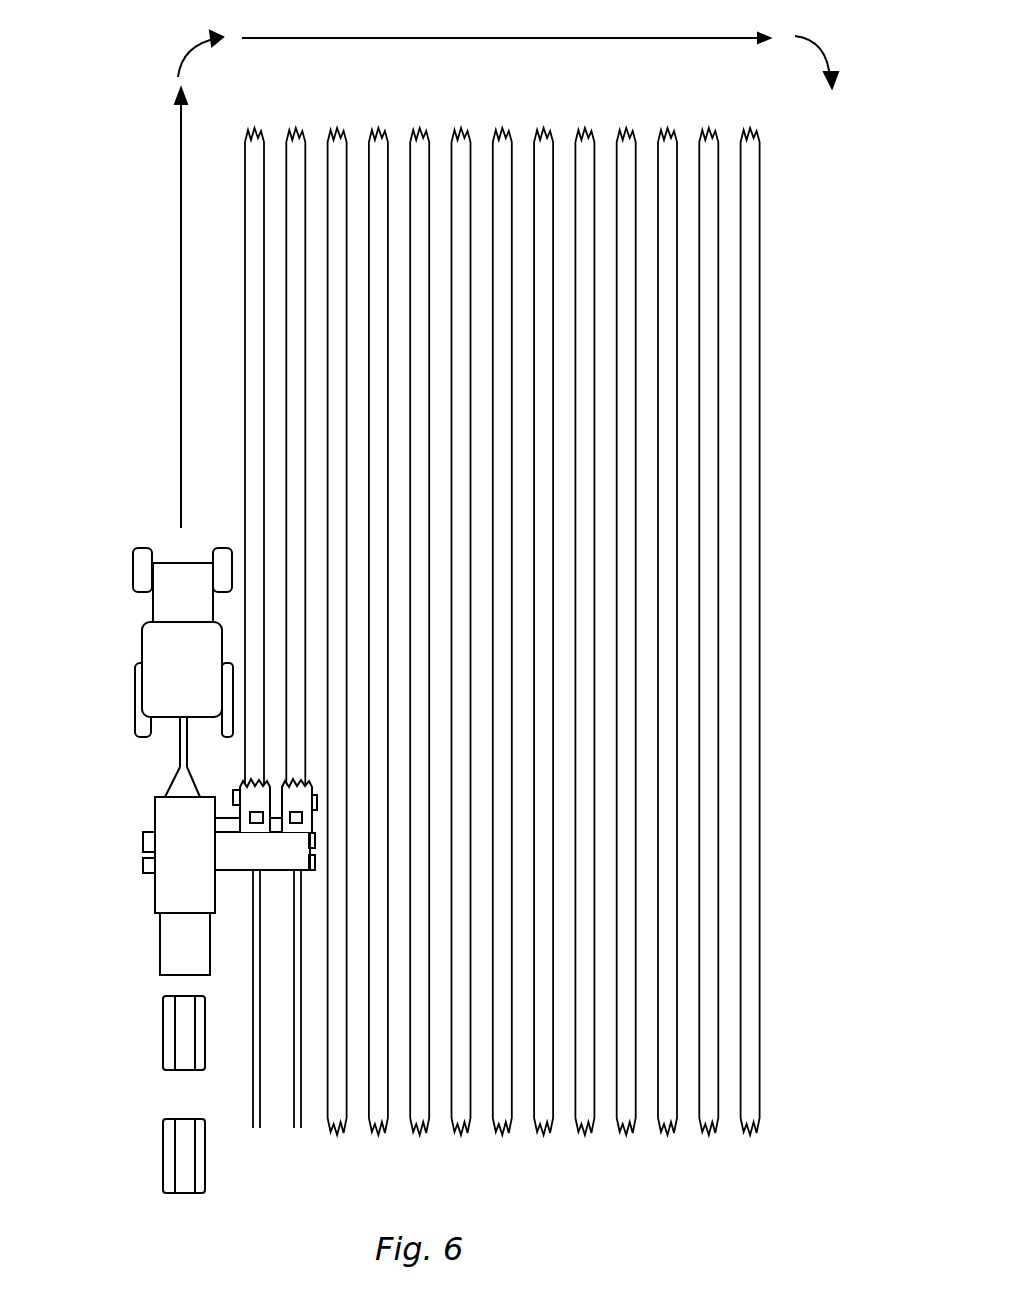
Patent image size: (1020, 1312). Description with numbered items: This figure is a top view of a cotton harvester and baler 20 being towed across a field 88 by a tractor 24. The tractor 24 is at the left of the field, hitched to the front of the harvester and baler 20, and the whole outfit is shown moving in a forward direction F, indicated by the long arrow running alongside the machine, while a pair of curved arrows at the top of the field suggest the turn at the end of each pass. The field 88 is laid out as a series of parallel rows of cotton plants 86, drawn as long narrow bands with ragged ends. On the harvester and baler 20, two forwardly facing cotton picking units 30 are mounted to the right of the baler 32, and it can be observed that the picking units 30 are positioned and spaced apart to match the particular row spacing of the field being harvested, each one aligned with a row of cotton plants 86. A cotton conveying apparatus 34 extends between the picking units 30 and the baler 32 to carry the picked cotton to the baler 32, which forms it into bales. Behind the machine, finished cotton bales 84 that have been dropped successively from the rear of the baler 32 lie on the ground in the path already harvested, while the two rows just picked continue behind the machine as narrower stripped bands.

The cotton harvester and baler 20 is at (235, 846).
The tractor 24 is at (110, 604).
The cotton picking unit 30 is at (306, 788).
The baler 32 is at (155, 893).
The cotton conveying apparatus 34 is at (232, 872).
The cotton bale 84 is at (163, 1145).
The rows of cotton plants 86 is at (296, 138).
The field 88 is at (803, 160).
The forward direction F is at (181, 362).